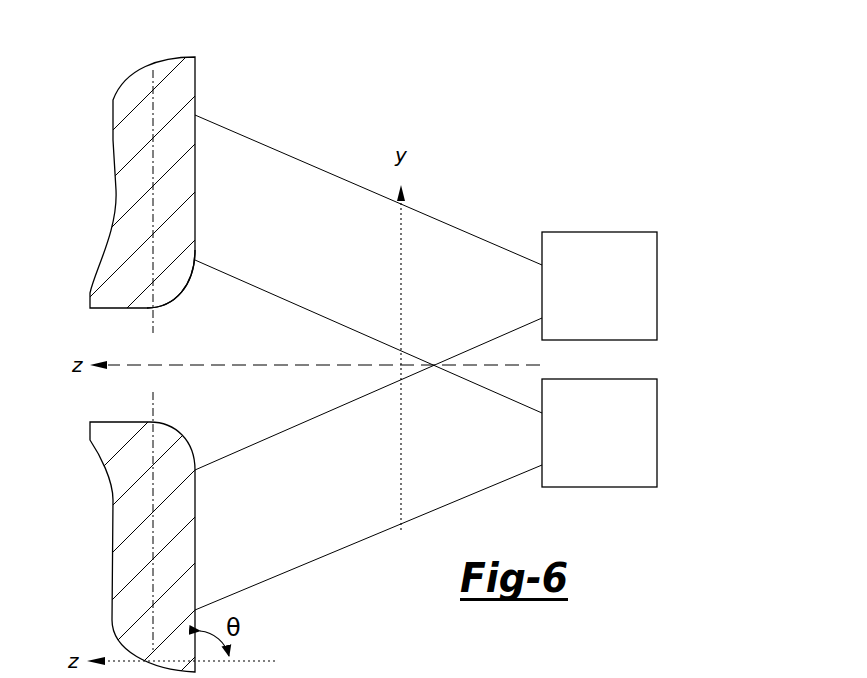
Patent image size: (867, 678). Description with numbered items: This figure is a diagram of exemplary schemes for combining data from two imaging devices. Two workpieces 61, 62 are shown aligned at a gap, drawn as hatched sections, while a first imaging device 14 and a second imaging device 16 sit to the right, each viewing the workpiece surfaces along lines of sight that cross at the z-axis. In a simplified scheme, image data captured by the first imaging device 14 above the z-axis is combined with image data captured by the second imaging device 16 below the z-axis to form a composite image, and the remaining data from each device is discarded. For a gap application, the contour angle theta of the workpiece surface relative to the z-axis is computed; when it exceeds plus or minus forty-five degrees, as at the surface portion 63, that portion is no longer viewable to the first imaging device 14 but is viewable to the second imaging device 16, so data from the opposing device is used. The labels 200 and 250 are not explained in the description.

The workpiece 61 is at (195, 83).
The workpiece 62 is at (195, 483).
The portion of the surface 63 is at (180, 290).
The first imaging device 14 is at (657, 292).
The second imaging device 16 is at (657, 437).
The weld seam region 200 is at (400, 677).
The reference position 250 is at (684, 677).